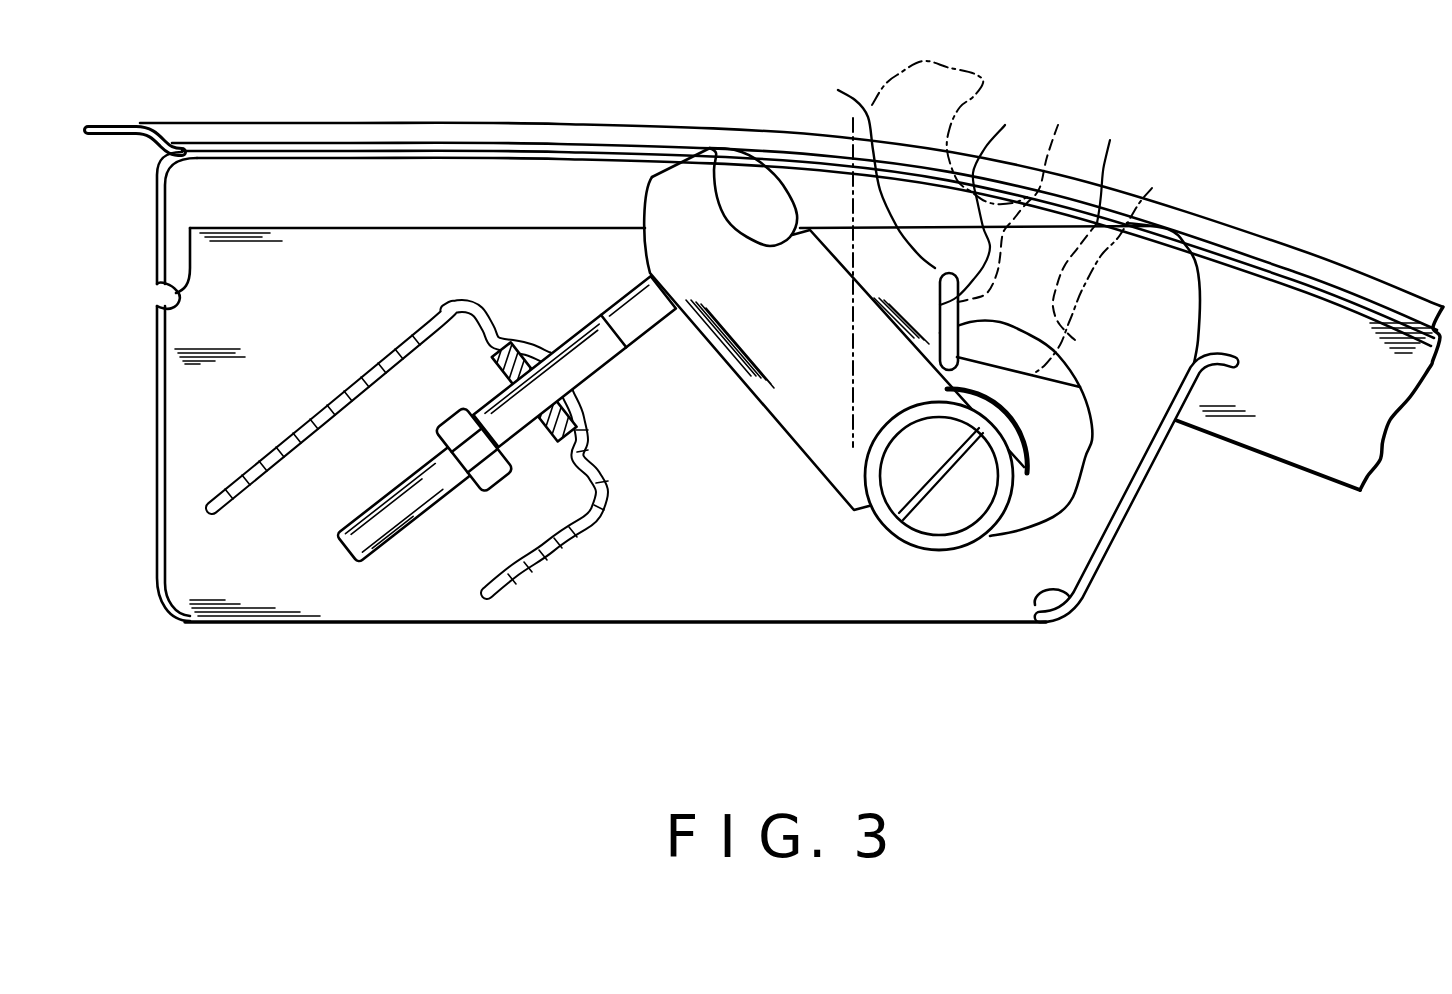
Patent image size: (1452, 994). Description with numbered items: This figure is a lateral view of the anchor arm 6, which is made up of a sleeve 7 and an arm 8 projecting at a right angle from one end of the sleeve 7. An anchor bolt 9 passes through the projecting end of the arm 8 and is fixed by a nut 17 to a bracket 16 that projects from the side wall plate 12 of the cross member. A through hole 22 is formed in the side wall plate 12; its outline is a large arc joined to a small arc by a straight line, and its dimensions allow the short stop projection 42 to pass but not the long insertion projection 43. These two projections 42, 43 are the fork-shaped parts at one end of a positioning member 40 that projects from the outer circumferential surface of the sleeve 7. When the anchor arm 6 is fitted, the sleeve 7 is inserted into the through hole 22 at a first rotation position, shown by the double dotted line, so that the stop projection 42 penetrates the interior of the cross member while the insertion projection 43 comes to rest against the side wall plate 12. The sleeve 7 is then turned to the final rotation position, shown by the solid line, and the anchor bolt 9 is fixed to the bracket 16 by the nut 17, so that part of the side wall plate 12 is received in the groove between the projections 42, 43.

The anchor arm 6 is at (842, 540).
The sleeve 7 is at (930, 547).
The arm 8 is at (778, 430).
The anchor bolt 9 is at (567, 330).
The side wall plate 12 is at (1007, 588).
The bracket 16 is at (553, 545).
The nut 17 is at (531, 462).
The through hole 22 is at (1084, 462).
The positioning member 40 is at (840, 92).
The stop projection 42 is at (1043, 209).
The insertion projection 43 is at (1163, 180).